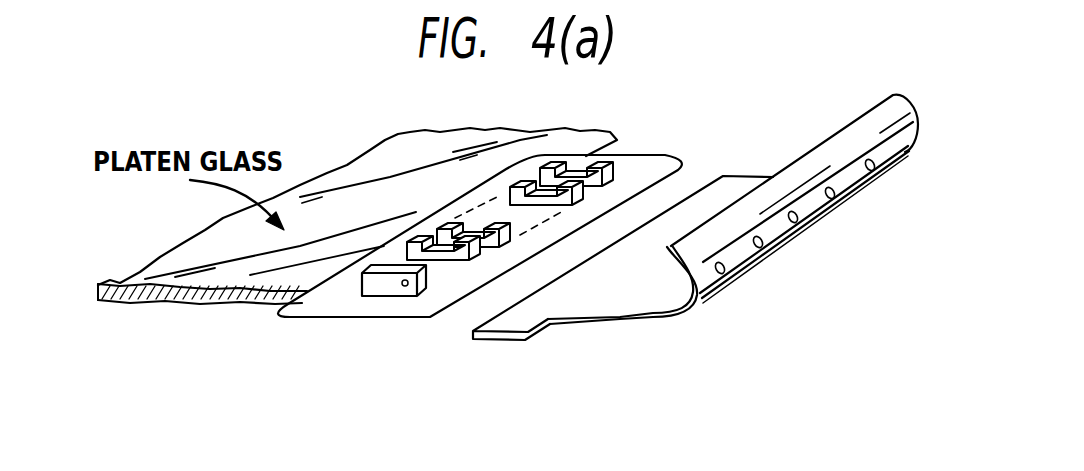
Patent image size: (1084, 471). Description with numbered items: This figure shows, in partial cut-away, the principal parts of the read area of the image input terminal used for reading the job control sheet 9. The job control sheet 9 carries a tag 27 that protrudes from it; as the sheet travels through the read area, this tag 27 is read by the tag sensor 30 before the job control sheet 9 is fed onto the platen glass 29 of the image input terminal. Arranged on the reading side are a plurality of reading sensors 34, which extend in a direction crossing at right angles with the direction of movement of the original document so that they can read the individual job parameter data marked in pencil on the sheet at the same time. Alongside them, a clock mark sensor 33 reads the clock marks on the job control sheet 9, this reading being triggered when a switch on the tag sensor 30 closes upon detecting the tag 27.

The job control sheet 9 is at (673, 316).
The tag 27 is at (502, 338).
The platen glass 29 is at (202, 275).
The tag sensor 30 is at (385, 293).
The clock mark sensor 33 is at (613, 174).
The reading sensors 34 is at (465, 262).